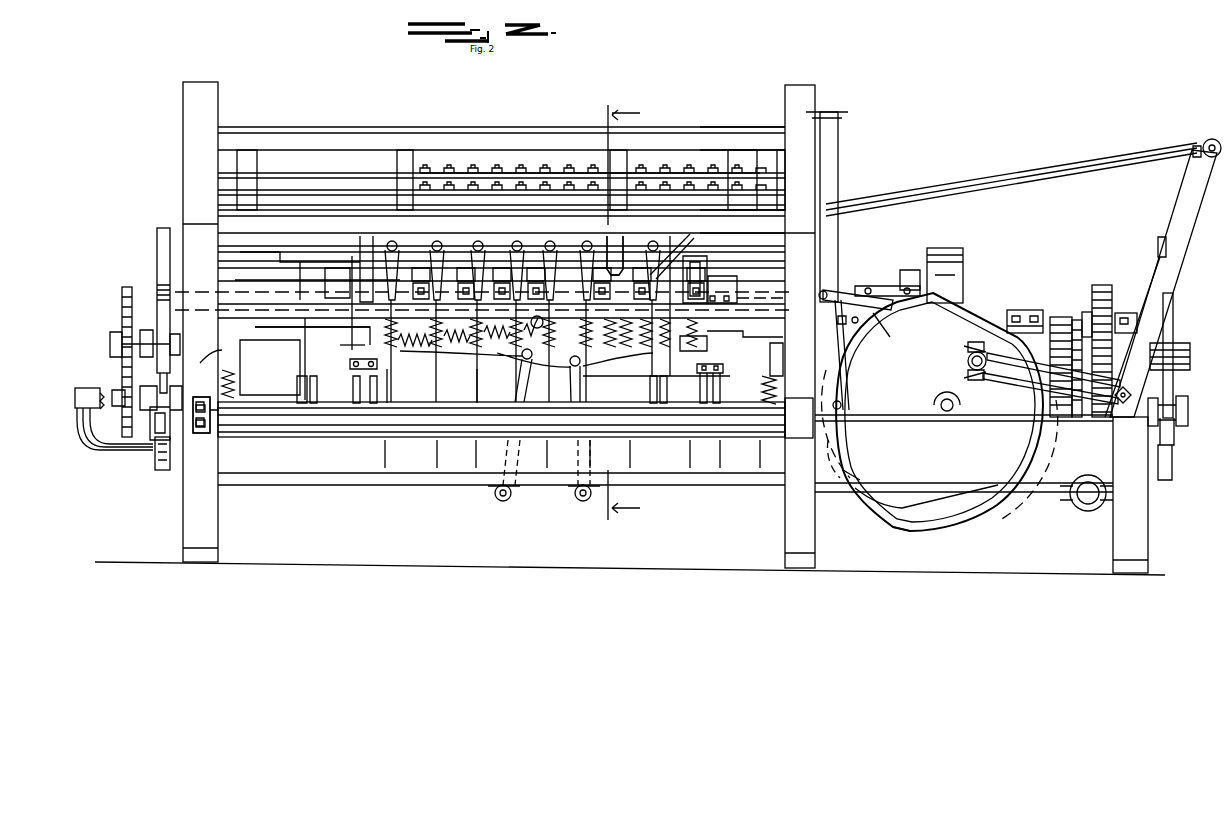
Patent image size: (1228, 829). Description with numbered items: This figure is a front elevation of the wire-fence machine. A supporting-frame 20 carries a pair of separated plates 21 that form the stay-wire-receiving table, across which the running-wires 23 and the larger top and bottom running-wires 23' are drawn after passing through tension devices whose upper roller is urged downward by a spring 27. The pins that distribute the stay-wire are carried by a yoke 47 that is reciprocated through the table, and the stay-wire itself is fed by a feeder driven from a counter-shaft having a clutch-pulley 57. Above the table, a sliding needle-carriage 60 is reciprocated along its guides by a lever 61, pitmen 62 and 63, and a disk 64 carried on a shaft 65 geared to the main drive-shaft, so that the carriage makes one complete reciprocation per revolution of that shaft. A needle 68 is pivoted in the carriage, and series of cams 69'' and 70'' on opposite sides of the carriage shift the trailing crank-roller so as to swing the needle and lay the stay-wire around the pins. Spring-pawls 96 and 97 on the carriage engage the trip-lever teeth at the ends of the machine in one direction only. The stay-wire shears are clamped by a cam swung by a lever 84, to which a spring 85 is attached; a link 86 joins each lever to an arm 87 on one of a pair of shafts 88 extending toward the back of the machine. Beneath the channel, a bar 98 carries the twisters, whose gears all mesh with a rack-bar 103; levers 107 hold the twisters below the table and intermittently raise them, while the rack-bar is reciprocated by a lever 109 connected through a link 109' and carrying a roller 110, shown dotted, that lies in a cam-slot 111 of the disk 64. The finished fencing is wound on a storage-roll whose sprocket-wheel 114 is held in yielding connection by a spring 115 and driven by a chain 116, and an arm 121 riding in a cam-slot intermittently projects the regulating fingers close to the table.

The supporting-frame 20 is at (785, 533).
The plates 21 is at (750, 290).
The running-wires 23 is at (495, 386).
The top and bottom running-wires 23' is at (404, 386).
The spring 27 is at (350, 343).
The yoke 47 is at (300, 350).
The clutch-pulley 57 is at (960, 272).
The needle-carriage 60 is at (672, 172).
The lever 61 is at (1178, 232).
The pitman 62 is at (1180, 150).
The pitman 63 is at (1010, 376).
The disk 64 is at (939, 412).
The shaft 65 is at (945, 404).
The needle 68 is at (705, 258).
The cams 69'' is at (593, 153).
The cams 70'' is at (593, 207).
The lever 84 is at (731, 346).
The spring 85 is at (455, 350).
The link 86 is at (589, 379).
The arm 87 is at (570, 385).
The shafts 88 is at (508, 500).
The spring-pawl 96 is at (606, 245).
The spring-pawl 97 is at (665, 250).
The bar 98 is at (205, 391).
The rack-bar 103 is at (880, 296).
The levers 107 is at (728, 383).
The lever 109 is at (940, 445).
The link 109' is at (902, 331).
The roller 110 is at (850, 416).
The cam-slot 111 is at (950, 505).
The sprocket-wheel 114 is at (122, 438).
The spring 115 is at (98, 440).
The chain 116 is at (122, 326).
The arm 121 is at (280, 262).